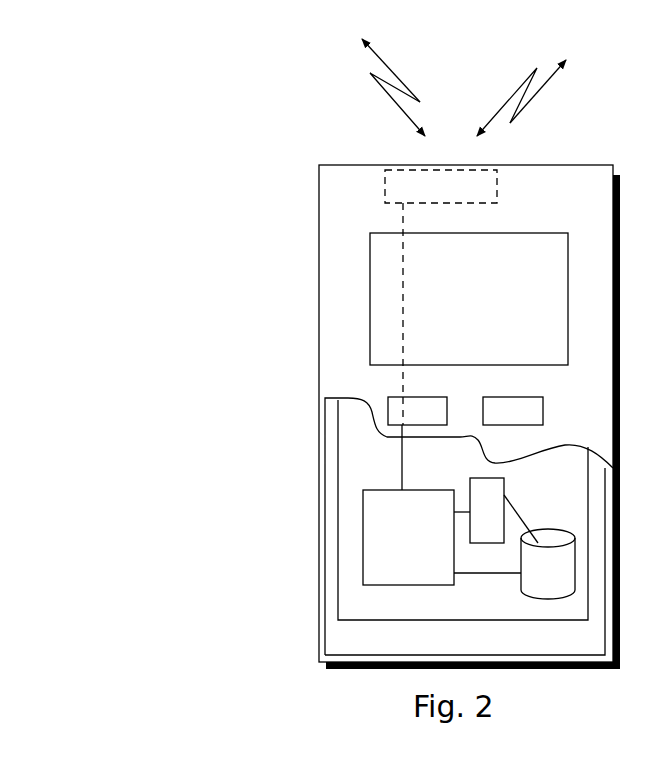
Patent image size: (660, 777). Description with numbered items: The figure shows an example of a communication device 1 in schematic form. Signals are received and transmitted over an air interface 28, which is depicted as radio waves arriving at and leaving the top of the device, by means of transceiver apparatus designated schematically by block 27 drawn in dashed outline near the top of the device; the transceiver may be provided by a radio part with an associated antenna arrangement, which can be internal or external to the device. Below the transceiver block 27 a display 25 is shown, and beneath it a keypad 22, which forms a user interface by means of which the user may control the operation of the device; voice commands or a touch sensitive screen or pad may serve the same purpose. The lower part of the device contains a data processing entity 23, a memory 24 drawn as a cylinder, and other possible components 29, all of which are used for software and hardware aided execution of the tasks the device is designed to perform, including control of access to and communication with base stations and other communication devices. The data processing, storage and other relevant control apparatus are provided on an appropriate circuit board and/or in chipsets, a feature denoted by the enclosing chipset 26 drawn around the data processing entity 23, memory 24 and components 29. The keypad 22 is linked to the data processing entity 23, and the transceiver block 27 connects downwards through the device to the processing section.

The communication device 1 is at (318, 208).
The keypad 22 is at (395, 410).
The data processing entity 23 is at (372, 523).
The memory 24 is at (540, 575).
The display 25 is at (387, 287).
The chipset 26 is at (363, 605).
The transceiver apparatus 27 is at (387, 188).
The air interface 28 is at (464, 87).
The other components 29 is at (488, 497).